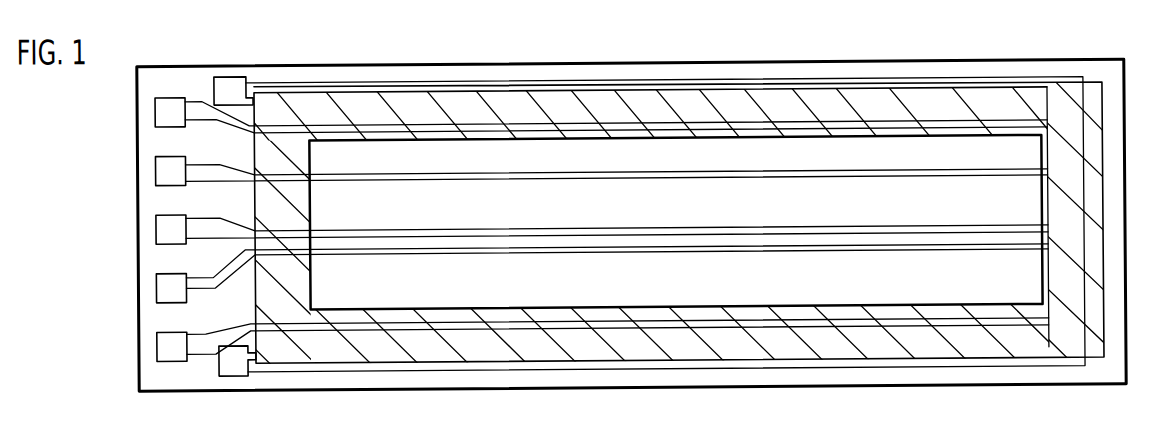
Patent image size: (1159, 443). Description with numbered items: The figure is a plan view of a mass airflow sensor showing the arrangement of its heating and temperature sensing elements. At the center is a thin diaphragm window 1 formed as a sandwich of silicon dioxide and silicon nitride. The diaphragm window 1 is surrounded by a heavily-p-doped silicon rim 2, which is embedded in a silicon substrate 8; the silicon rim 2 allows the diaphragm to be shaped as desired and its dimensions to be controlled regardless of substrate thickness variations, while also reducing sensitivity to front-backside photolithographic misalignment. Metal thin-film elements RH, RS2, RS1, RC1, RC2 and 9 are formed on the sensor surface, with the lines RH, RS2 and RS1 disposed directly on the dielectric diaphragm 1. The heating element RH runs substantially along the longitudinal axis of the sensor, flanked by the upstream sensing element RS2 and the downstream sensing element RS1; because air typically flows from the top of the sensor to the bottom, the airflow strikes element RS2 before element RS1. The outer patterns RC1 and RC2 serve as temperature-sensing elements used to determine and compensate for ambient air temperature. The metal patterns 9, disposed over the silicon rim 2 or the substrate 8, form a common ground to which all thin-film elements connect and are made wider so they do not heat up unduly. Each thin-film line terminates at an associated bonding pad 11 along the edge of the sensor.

The diaphragm window 1 is at (434, 287).
The heavily-p-doped silicon rim 2 is at (287, 301).
The silicon substrate 8 is at (740, 375).
The common ground metal patterns 9 is at (473, 77).
The bonding pad 11 is at (155, 106).
The ambient temperature-sensing element RC1 is at (442, 127).
The ambient temperature-sensing element RC2 is at (700, 326).
The downstream temperature sensing element RS1 is at (639, 254).
The upstream temperature sensing element RS2 is at (500, 174).
The heating element RH is at (519, 227).